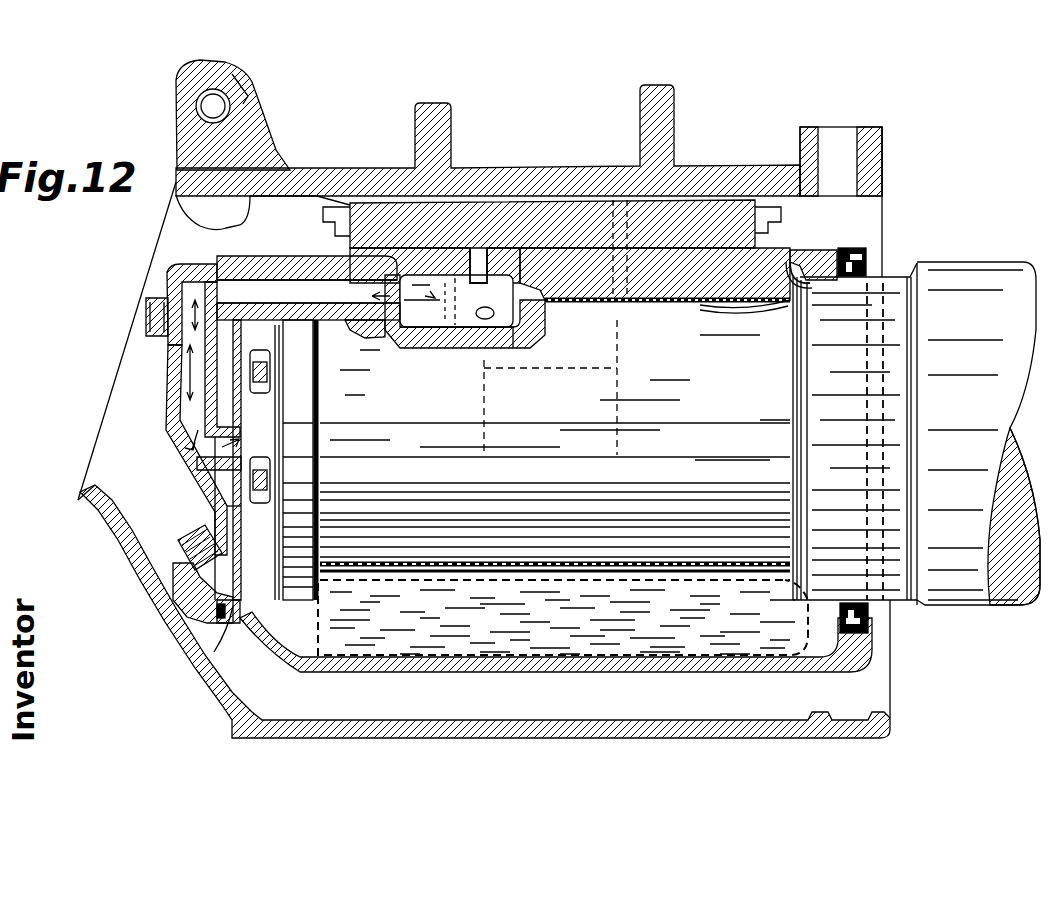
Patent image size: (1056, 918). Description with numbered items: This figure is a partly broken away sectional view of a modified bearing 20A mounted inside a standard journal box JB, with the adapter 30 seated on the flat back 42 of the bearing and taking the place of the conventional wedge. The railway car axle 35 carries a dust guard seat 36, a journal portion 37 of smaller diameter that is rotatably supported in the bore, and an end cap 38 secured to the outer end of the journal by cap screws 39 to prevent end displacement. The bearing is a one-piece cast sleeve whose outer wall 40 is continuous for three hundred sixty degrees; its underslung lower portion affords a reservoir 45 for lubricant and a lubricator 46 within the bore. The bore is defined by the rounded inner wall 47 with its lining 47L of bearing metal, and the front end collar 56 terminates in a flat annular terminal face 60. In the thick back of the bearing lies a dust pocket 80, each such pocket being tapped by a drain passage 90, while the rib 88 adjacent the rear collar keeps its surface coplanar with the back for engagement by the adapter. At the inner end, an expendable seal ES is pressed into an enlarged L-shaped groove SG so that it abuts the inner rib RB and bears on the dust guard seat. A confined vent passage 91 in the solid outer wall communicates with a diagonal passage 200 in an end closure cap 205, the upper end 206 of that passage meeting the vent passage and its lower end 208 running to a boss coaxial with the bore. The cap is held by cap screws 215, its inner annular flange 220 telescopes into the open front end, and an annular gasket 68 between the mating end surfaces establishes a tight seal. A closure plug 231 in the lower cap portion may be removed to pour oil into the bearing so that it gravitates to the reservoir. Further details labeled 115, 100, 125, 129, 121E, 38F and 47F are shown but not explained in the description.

The journal box JB is at (496, 165).
The adapter 30 is at (718, 214).
The back of the bearing 42 is at (557, 250).
The retaining slot 115 is at (332, 212).
The transverse rib 88 is at (754, 251).
The drain passage 90 is at (508, 326).
The oil pocket 100 is at (446, 292).
The passage 125 is at (463, 262).
The divider 129 is at (450, 290).
The dust pocket 80 is at (458, 330).
The edge of cup 121E is at (434, 340).
The front end collar 56 is at (248, 260).
The vent passage 91 is at (308, 290).
The upper end of passage 206 is at (176, 270).
The flat annular terminal face 60 is at (217, 268).
The cap screws 215 is at (144, 313).
The end closure cap 205 is at (158, 381).
The passage 200 is at (160, 418).
The lower end of passage 208 is at (250, 437).
The inner annular flange 220 is at (234, 603).
The closure plug 231 is at (188, 547).
The annular gasket 68 is at (229, 627).
The cap screws 39 is at (259, 504).
The end cap 38 is at (296, 410).
The journal portion 37 is at (680, 455).
The dashed line of plate 38F is at (322, 586).
The lubricator 46 is at (320, 637).
The reservoir 45 is at (562, 622).
The outer wall 40 is at (323, 673).
The bearing 20A is at (434, 672).
The inner rib RB is at (838, 620).
The dust guard seat 36 is at (848, 399).
The flange fillet 47F is at (795, 300).
The rounded inner wall 47 is at (741, 312).
The lining 47L is at (722, 312).
The seal groove SG is at (865, 250).
The expendable seal ES is at (863, 266).
The axle 35 is at (952, 296).